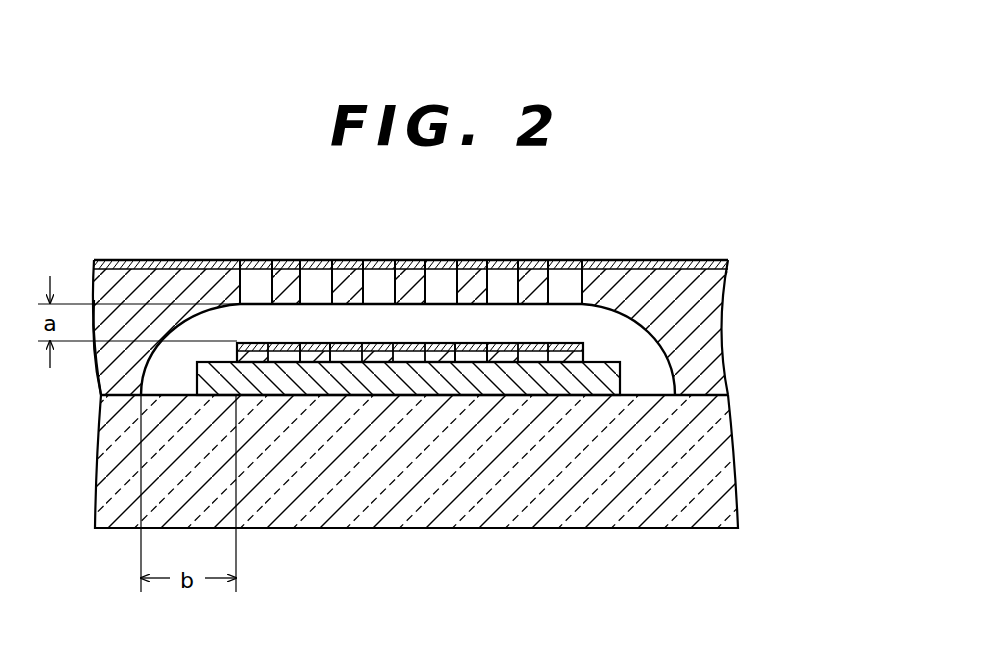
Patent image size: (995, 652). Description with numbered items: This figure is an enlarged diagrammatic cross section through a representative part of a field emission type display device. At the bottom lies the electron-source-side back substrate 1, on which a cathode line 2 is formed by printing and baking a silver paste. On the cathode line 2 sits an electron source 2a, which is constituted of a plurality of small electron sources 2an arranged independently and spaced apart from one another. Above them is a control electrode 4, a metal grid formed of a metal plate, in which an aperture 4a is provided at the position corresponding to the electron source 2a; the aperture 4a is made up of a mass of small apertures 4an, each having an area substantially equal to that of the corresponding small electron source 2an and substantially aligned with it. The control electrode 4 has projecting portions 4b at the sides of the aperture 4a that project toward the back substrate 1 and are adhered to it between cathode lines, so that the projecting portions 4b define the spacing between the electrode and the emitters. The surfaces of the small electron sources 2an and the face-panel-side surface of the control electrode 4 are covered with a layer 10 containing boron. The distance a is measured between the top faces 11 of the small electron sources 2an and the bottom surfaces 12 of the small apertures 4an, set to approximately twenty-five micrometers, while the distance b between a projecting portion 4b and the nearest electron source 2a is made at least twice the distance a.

The back substrate 1 is at (712, 482).
The cathode line 2 is at (607, 383).
The electron source 2a is at (510, 466).
The small electron source 2an is at (446, 343).
The control electrode 4 is at (402, 312).
The aperture 4a is at (502, 283).
The small aperture 4an is at (380, 282).
The projecting portion 4b is at (99, 376).
The layer containing boron 10 is at (643, 265).
The top face of small electron source 11 is at (318, 343).
The bottom surface of small aperture 12 is at (278, 316).